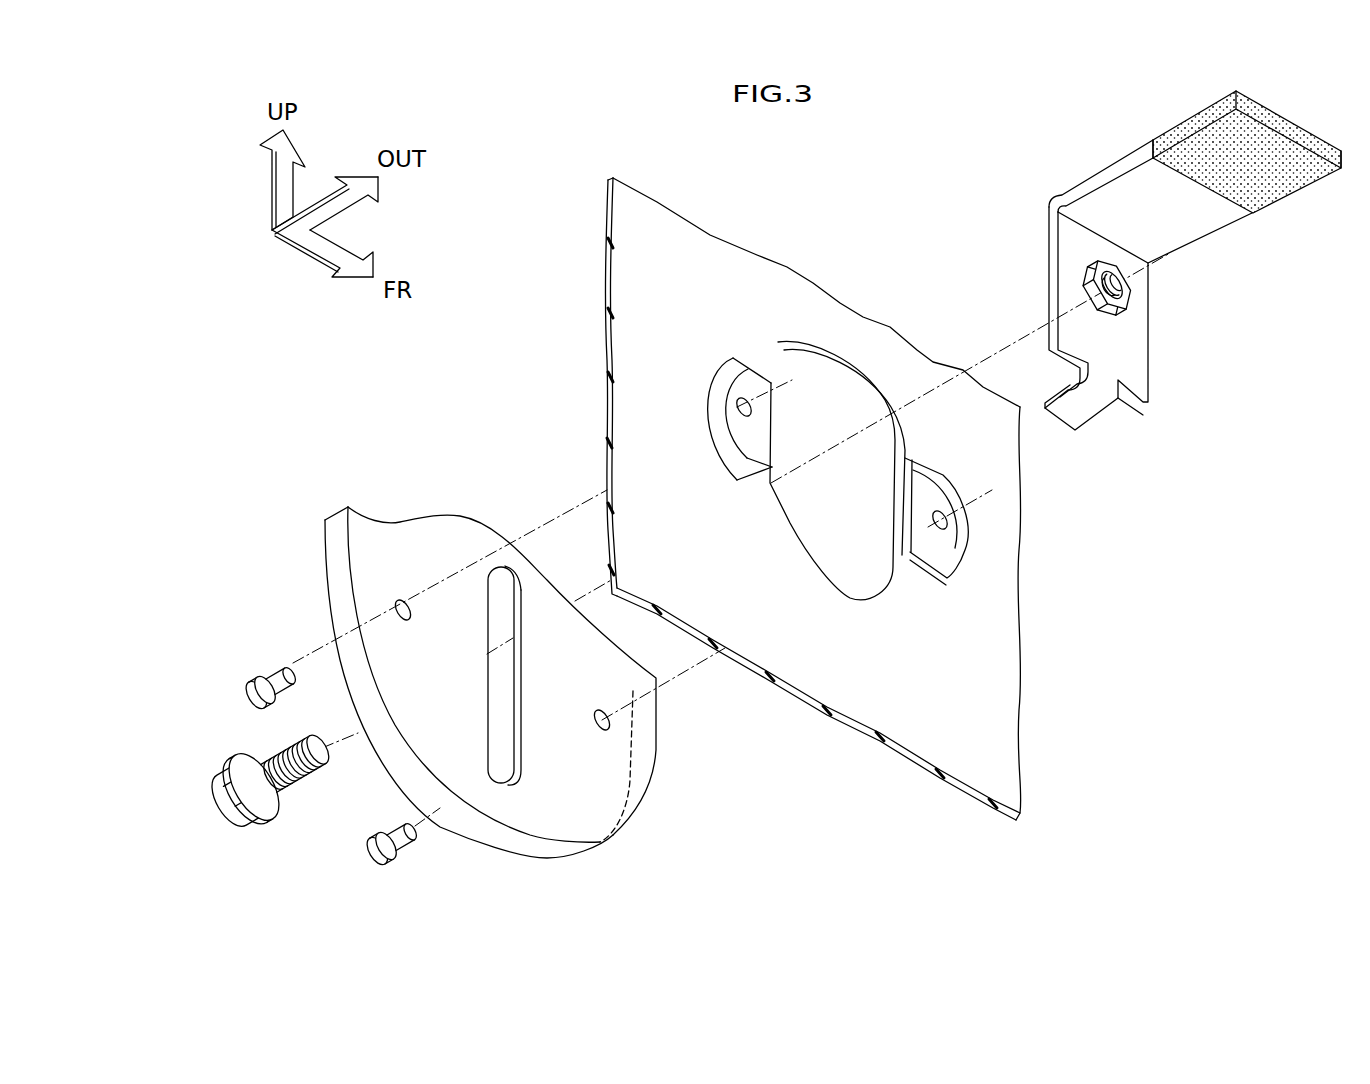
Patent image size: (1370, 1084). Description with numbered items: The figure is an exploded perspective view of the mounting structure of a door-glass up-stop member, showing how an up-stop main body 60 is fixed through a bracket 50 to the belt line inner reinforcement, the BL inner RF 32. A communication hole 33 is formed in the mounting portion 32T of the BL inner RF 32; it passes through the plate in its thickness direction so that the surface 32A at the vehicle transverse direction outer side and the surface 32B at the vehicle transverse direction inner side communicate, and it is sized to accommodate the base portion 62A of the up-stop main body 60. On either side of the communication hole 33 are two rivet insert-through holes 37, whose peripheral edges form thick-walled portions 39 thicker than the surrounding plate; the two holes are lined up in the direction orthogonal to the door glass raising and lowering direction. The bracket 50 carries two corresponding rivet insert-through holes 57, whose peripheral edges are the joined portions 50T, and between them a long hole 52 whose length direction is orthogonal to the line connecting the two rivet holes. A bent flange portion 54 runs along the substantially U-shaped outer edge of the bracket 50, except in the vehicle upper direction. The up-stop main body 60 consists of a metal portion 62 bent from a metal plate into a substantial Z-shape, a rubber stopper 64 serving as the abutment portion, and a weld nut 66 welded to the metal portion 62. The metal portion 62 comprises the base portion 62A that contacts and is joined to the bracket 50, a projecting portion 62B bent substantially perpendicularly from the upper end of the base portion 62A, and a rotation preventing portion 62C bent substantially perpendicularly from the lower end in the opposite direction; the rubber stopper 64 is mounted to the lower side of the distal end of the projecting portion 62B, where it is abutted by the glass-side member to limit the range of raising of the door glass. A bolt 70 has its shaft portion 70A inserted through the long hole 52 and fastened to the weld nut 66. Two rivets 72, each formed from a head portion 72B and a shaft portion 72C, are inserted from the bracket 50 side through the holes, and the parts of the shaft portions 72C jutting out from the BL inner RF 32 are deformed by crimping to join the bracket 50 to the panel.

The BL inner RF 32 is at (814, 471).
The mounting portion 32T is at (598, 192).
The surface at the vehicle transverse direction outer side 32A is at (995, 668).
The surface at the vehicle transverse direction inner side 32B is at (850, 723).
The communication hole 33 is at (845, 506).
The rivet insert-through holes 37 is at (744, 398).
The thick-walled portion 39 is at (750, 437).
The bracket 50 is at (346, 470).
The joined portions 50T is at (387, 590).
The long hole 52 is at (508, 707).
The flange portion 54 is at (333, 550).
The rivet insert-through holes 57 is at (413, 597).
The up-stop main body 60 is at (1043, 142).
The metal portion 62 is at (1048, 206).
The base portion 62A is at (1137, 357).
The projecting portion 62B is at (1182, 232).
The rotation preventing portion 62C is at (1087, 412).
The rubber stopper 64 is at (1277, 190).
The weld nut 66 is at (1130, 300).
The bolt 70 is at (228, 825).
The shaft portion 70A is at (293, 784).
The rivets 72 is at (245, 698).
The head portions 72B is at (250, 682).
The shaft portions 72C is at (288, 694).